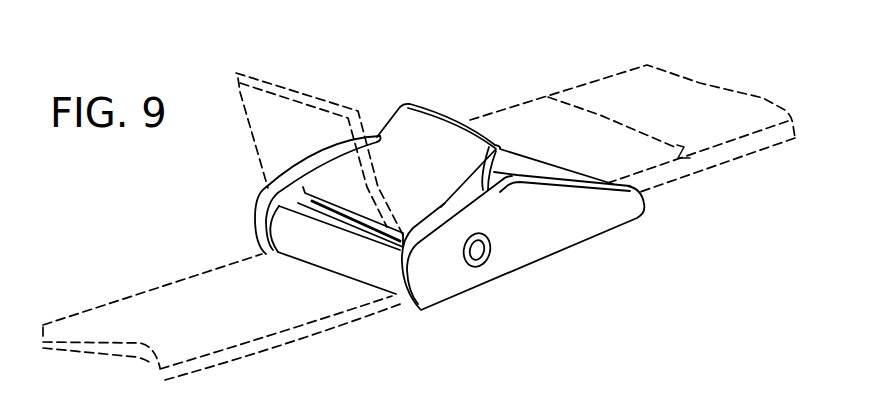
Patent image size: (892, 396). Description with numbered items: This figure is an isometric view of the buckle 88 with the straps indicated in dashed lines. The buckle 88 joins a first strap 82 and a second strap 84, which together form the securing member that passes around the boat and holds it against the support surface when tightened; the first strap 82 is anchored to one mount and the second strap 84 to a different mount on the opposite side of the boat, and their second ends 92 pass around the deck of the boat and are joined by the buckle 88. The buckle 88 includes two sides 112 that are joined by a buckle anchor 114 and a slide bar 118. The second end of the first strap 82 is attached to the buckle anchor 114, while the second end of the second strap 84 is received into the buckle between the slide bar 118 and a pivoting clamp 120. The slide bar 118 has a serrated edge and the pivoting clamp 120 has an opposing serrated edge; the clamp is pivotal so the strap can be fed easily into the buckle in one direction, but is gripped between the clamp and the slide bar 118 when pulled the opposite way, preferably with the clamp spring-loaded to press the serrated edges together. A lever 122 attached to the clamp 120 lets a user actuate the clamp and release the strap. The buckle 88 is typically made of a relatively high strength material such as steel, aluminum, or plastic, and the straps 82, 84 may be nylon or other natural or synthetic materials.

The first strap 82 is at (707, 107).
The second strap 84 is at (258, 337).
The buckle 88 is at (532, 266).
The second ends 92 is at (243, 93).
The sides 112 is at (272, 177).
The buckle anchor 114 is at (525, 160).
The slide bar 118 is at (360, 262).
The pivoting clamp 120 is at (342, 195).
The lever 122 is at (418, 137).